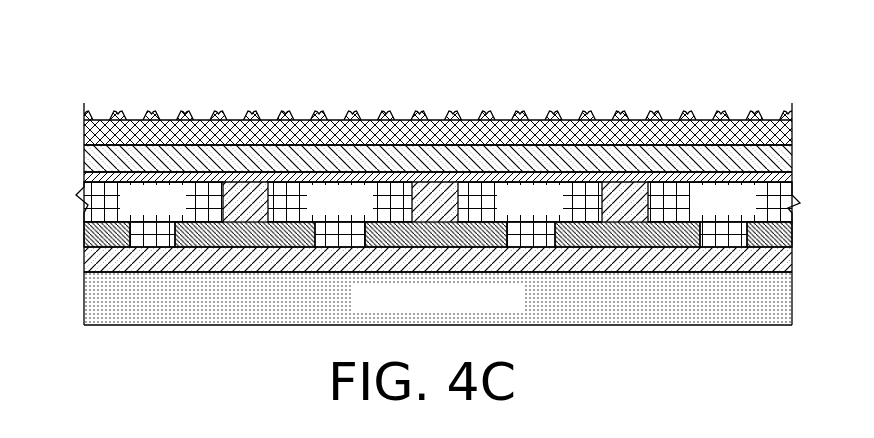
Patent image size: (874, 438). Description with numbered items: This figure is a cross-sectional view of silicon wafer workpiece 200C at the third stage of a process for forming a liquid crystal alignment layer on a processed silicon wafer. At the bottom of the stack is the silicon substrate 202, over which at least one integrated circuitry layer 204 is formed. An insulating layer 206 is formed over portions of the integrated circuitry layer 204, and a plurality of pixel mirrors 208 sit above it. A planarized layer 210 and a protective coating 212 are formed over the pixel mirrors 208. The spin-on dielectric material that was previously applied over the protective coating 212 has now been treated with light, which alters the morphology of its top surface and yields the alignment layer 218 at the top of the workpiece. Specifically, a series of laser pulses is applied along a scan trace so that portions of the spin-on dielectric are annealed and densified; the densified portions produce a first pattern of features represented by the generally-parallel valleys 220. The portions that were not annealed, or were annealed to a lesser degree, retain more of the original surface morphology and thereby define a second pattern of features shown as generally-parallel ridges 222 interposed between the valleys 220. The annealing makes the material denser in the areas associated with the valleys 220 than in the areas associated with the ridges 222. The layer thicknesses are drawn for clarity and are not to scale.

The silicon wafer workpiece 200C is at (252, 94).
The silicon substrate 202 is at (613, 325).
The integrated circuitry layer 204 is at (787, 260).
The insulating layer 206 is at (787, 236).
The pixel mirrors 208 is at (741, 213).
The planarized layer 210 is at (787, 176).
The protective coating 212 is at (787, 153).
The alignment layer 218 is at (475, 94).
The valleys 220 is at (437, 120).
The ridges 222 is at (590, 120).